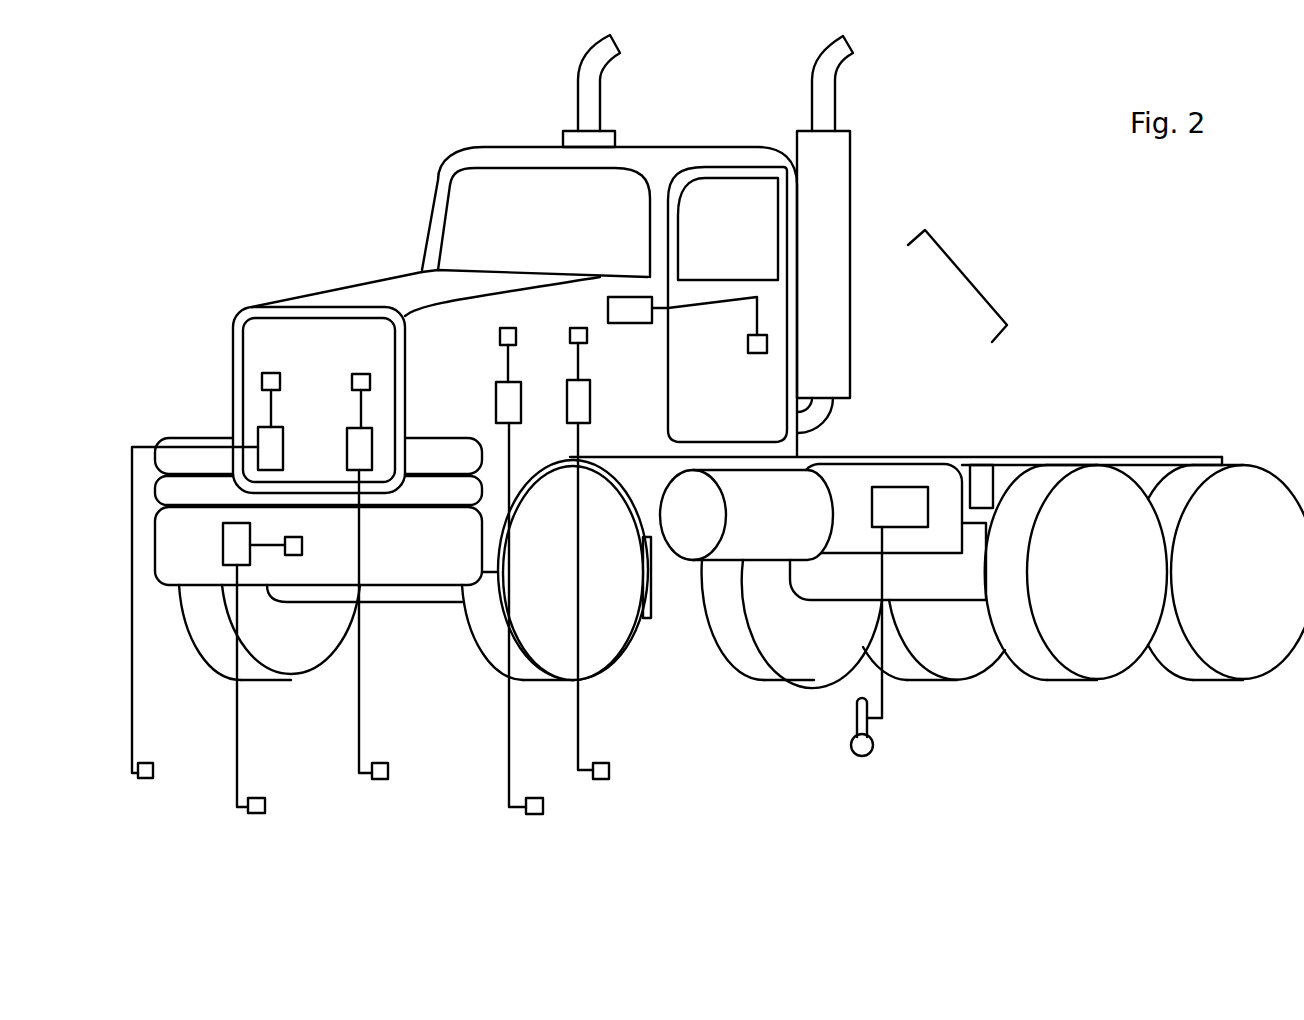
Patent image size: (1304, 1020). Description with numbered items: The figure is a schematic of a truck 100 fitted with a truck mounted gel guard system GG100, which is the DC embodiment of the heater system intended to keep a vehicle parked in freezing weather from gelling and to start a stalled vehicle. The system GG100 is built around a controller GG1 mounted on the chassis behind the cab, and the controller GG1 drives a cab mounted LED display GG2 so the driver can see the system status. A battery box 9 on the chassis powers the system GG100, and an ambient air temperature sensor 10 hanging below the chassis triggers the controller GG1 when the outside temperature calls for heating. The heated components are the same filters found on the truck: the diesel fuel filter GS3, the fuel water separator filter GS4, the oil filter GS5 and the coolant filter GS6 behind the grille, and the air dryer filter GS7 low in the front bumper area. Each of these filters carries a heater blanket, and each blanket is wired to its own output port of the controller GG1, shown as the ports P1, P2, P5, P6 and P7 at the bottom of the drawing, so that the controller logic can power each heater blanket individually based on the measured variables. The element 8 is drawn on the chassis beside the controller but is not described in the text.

The truck 100 is at (735, 377).
The battery box 9 is at (848, 482).
The valve unit 8 is at (983, 473).
The ambient air temperature sensor 10 is at (853, 722).
The controller GG1 is at (897, 500).
The cab mounted LED display GG2 is at (607, 308).
The truck mounted gel guard system GG100 is at (965, 277).
The diesel fuel filter GS3 is at (577, 403).
The fuel water separator filter GS4 is at (507, 407).
The oil filter GS5 is at (358, 433).
The coolant filter GS6 is at (263, 443).
The air dryer filter GS7 is at (232, 555).
The output port P1 is at (605, 775).
The output port P2 is at (537, 812).
The output port P5 is at (382, 781).
The output port P6 is at (147, 780).
The output port P7 is at (256, 813).